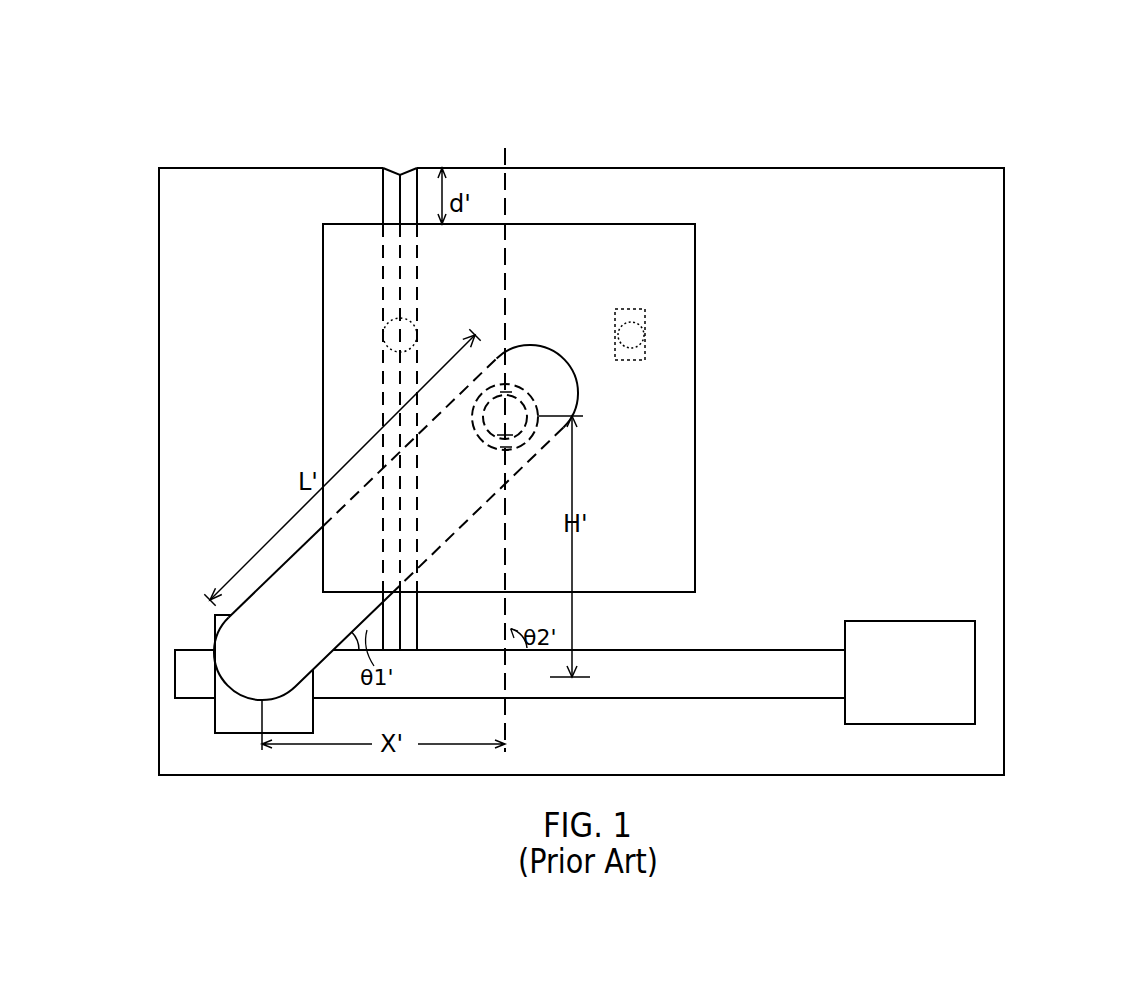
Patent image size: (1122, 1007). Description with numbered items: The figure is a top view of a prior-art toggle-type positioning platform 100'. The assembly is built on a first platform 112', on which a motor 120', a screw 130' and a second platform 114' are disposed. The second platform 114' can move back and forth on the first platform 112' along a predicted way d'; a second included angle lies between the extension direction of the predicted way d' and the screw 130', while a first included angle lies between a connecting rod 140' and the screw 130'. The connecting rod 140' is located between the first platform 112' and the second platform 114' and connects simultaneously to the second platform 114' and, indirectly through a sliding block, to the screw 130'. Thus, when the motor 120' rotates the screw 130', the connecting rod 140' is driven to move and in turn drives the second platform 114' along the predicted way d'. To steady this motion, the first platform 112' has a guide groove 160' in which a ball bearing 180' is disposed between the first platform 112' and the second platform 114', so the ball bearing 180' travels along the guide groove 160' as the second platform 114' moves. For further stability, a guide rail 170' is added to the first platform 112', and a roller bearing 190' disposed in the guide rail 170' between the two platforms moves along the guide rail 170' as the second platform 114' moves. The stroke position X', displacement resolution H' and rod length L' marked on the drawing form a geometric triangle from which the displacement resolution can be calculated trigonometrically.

The toggle-type positioning platform 100' is at (599, 402).
The first platform 112' is at (627, 471).
The second platform 114' is at (552, 400).
The motor 120' is at (970, 652).
The screw 130' is at (510, 706).
The connecting rod 140' is at (381, 539).
The guide groove 160' is at (362, 375).
The guide rail 170' is at (692, 364).
The ball bearing 180' is at (337, 303).
The roller bearing 190' is at (688, 315).